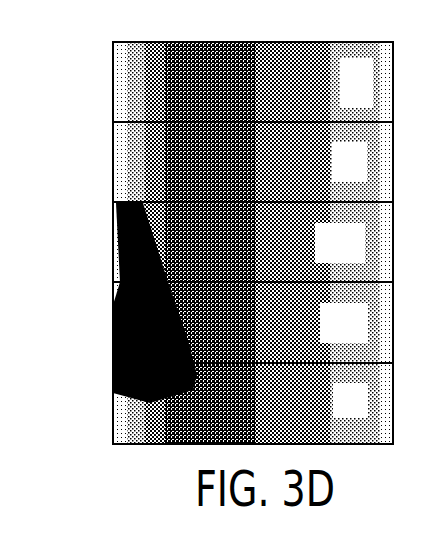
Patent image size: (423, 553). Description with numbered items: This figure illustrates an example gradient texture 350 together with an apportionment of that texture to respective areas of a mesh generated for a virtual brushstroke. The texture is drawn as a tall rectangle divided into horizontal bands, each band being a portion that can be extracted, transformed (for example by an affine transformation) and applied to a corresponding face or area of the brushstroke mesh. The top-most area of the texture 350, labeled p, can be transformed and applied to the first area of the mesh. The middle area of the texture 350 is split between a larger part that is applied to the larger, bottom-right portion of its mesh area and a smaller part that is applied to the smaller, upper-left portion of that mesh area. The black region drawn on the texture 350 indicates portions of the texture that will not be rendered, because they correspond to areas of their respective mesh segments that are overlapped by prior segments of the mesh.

The gradient texture 350 is at (199, 226).
The top-most area of the texture p is at (364, 98).